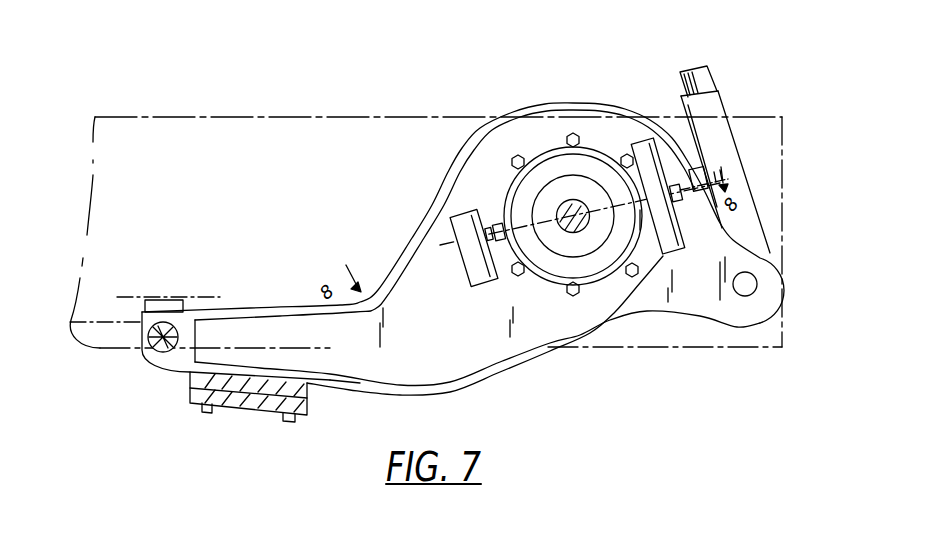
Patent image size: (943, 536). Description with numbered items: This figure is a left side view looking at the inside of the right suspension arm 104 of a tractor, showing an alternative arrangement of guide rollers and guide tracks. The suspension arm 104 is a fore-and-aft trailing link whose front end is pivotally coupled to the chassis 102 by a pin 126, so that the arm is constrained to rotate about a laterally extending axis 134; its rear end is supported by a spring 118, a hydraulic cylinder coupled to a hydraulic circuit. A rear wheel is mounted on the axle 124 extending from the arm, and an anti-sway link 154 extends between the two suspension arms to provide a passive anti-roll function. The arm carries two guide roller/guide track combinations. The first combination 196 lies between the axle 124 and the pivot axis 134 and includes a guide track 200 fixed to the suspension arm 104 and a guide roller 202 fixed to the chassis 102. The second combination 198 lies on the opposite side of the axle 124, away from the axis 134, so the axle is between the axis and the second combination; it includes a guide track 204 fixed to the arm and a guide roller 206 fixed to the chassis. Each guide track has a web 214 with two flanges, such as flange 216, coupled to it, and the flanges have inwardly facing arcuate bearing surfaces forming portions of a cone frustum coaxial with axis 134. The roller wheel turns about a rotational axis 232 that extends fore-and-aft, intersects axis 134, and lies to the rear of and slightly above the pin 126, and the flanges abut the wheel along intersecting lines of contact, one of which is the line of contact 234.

The chassis 102 is at (136, 116).
The right suspension arm 104 is at (506, 378).
The spring 118 is at (717, 80).
The axle 124 is at (572, 212).
The pin 126 is at (146, 352).
The axis 134 is at (170, 324).
The anti-sway link 154 is at (168, 398).
The first guide roller/guide track combination 196 is at (376, 168).
The second guide roller/guide track combination 198 is at (602, 91).
The guide track 200 is at (472, 256).
The guide roller 202 is at (498, 228).
The guide track 204 is at (615, 230).
The guide roller 206 is at (704, 172).
The web 214 is at (452, 226).
The flange 216 is at (489, 284).
The rotational axis 232 is at (414, 258).
The line of contact 234 is at (366, 302).